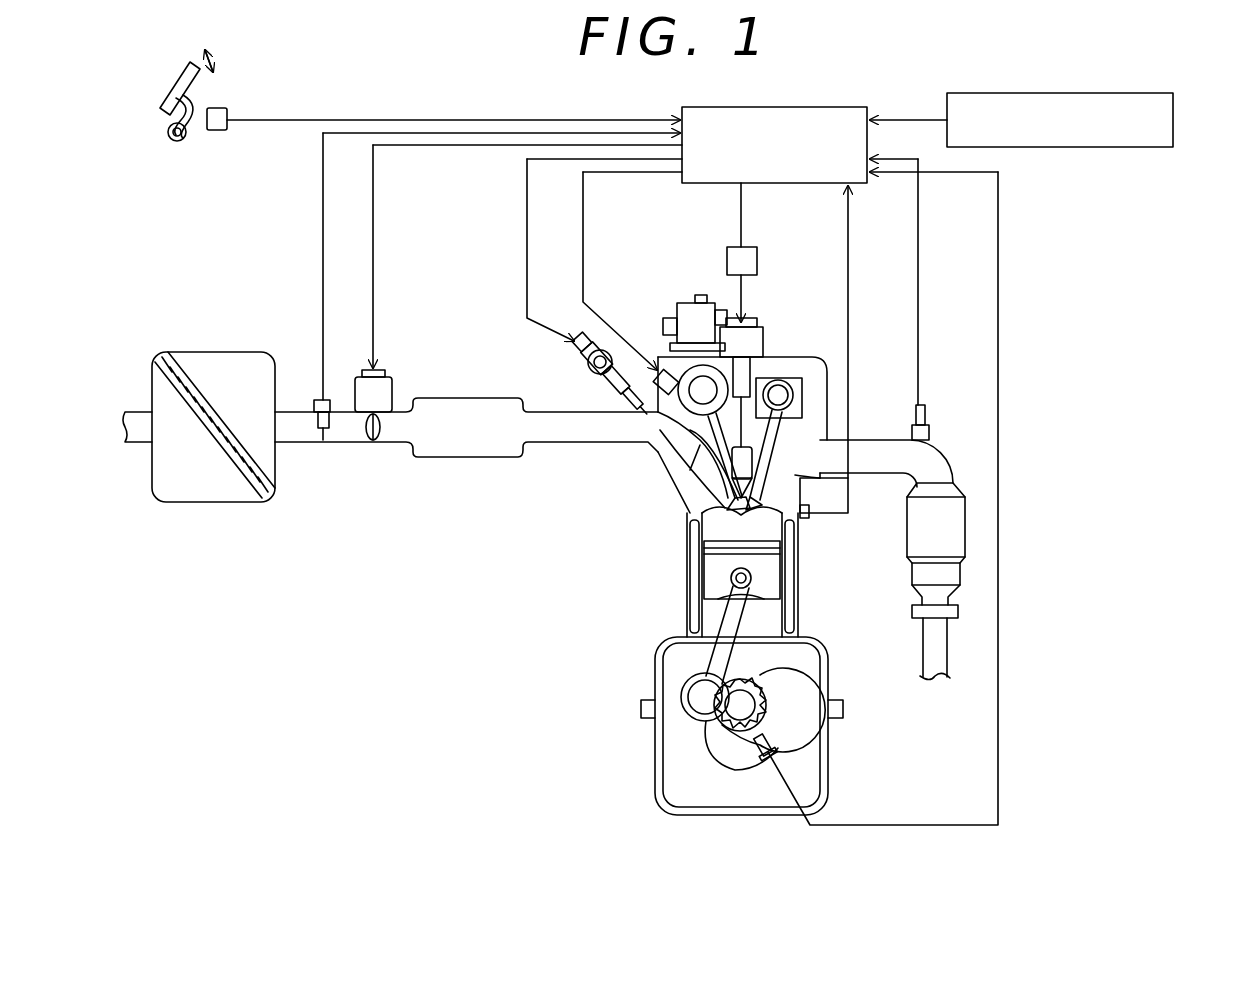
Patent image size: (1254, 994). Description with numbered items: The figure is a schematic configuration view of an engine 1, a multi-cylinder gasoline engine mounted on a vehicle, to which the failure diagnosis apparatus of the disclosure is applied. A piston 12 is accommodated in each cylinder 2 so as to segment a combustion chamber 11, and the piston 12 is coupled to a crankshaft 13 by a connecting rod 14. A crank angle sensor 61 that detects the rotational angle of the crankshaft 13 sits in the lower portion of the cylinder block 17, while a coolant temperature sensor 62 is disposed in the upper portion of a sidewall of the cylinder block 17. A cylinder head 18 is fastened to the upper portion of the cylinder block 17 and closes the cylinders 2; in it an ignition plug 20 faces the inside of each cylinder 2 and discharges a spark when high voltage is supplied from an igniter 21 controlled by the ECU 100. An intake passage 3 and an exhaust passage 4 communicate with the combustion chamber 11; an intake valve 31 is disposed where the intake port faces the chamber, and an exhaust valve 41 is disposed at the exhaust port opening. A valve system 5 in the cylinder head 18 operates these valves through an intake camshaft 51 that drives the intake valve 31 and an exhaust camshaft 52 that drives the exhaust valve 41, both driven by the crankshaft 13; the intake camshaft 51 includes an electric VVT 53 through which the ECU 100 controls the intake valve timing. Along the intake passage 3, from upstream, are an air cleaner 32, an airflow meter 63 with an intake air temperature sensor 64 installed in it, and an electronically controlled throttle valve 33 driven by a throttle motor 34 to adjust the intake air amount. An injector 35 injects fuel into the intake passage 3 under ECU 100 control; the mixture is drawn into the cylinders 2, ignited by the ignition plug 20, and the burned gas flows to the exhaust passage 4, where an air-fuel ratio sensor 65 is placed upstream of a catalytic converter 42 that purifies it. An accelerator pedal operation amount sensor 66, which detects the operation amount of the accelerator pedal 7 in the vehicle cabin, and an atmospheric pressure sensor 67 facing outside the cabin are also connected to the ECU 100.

The engine 1 is at (671, 546).
The cylinder 2 is at (800, 625).
The intake passage 3 is at (555, 443).
The exhaust passage 4 is at (862, 462).
The valve system 5 is at (775, 365).
The accelerator pedal 7 is at (170, 85).
The combustion chamber 11 is at (690, 505).
The piston 12 is at (712, 582).
The crankshaft 13 is at (748, 770).
The connecting rod 14 is at (720, 622).
The cylinder block 17 is at (688, 568).
The cylinder head 18 is at (670, 487).
The ignition plug 20 is at (688, 530).
The igniter 21 is at (727, 258).
The intake valve 31 is at (685, 472).
The air cleaner 32 is at (266, 502).
The throttle valve 33 is at (380, 432).
The throttle motor 34 is at (392, 388).
The injector 35 is at (592, 378).
The exhaust valve 41 is at (824, 495).
The catalytic converter 42 is at (906, 533).
The intake camshaft 51 is at (688, 332).
The exhaust camshaft 52 is at (782, 392).
The electric VVT 53 is at (660, 362).
The crank angle sensor 61 is at (772, 768).
The coolant temperature sensor 62 is at (806, 520).
The airflow meter 63 is at (316, 400).
The intake air temperature sensor 64 is at (330, 414).
The air-fuel ratio sensor 65 is at (930, 422).
The accelerator pedal operation amount sensor 66 is at (222, 108).
The atmospheric pressure sensor 67 is at (1174, 120).
The ECU 100 is at (824, 107).